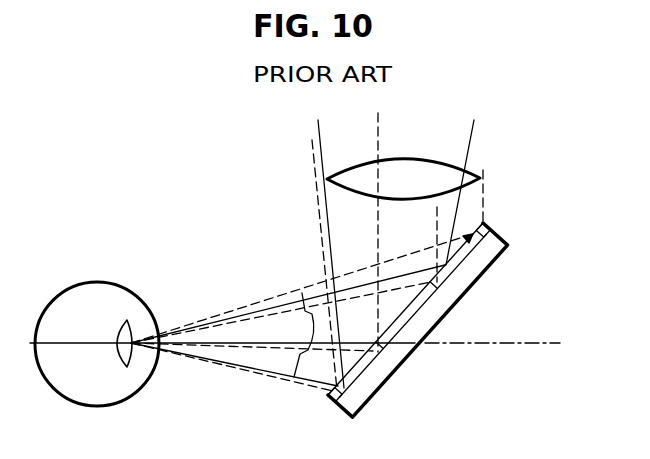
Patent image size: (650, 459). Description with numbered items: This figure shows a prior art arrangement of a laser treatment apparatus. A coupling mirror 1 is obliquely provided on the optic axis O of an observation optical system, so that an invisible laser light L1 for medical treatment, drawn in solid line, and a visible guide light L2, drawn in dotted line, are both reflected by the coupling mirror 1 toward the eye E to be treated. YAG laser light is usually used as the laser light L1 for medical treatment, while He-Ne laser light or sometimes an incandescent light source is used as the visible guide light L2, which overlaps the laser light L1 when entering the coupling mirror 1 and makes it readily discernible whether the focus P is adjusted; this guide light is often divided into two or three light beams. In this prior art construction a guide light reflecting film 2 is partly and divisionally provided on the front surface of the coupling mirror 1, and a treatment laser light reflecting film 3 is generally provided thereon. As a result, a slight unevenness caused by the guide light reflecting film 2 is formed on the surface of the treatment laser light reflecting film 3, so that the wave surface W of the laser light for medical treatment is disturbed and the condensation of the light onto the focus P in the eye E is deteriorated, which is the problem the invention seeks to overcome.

The coupling mirror 1 is at (506, 240).
The guide light reflecting film 2 is at (455, 267).
The treatment laser light reflecting film 3 is at (487, 225).
The eye E is at (129, 291).
The focus P is at (131, 353).
The wave surface W is at (296, 376).
The laser light for medical treatment L1 is at (317, 132).
The visible guide light L2 is at (379, 155).
The optic axis O is at (450, 345).